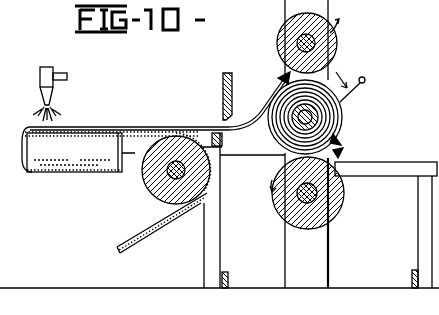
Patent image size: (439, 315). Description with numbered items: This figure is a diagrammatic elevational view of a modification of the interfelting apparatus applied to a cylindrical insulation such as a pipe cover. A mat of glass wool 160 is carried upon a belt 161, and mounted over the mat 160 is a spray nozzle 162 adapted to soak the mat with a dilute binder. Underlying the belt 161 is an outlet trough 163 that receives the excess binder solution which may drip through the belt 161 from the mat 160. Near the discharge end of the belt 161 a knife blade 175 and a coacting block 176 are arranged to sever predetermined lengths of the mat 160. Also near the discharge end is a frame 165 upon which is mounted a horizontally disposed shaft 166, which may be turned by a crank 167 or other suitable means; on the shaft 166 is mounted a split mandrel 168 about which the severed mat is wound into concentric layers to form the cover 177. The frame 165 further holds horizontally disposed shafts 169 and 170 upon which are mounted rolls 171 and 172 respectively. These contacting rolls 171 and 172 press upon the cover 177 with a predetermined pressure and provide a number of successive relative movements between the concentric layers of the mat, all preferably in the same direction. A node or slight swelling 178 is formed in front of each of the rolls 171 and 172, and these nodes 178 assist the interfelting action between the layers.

The mat of glass wool 160 is at (75, 128).
The belt 161 is at (138, 133).
The spray nozzle 162 is at (47, 66).
The outlet trough 163 is at (55, 173).
The frame 165 is at (322, 253).
The shaft 166 is at (348, 128).
The crank 167 is at (365, 81).
The split mandrel 168 is at (318, 112).
The shaft 169 is at (314, 190).
The shaft 170 is at (315, 41).
The roll 171 is at (337, 205).
The roll 172 is at (338, 51).
The knife blade 175 is at (223, 95).
The coacting block 176 is at (222, 142).
The cover 177 is at (340, 143).
The node 178 is at (283, 75).